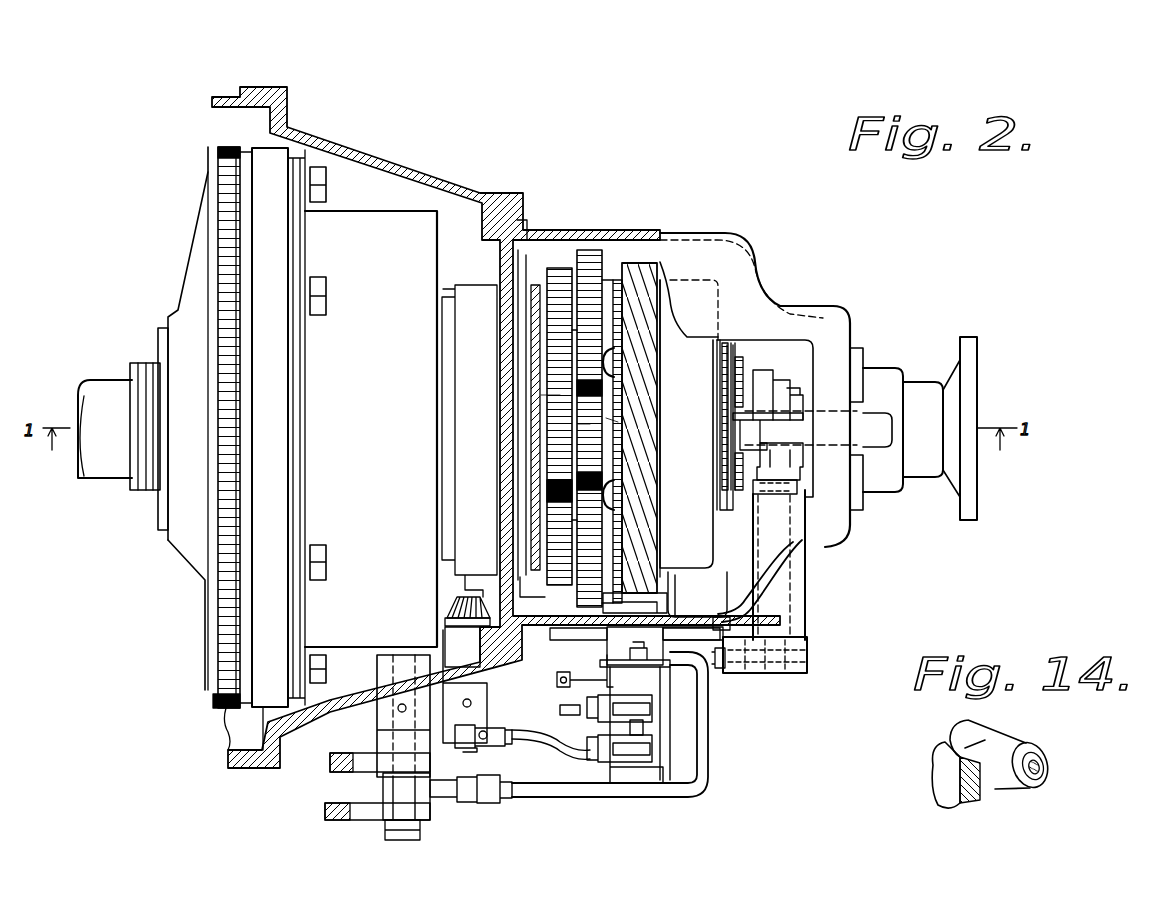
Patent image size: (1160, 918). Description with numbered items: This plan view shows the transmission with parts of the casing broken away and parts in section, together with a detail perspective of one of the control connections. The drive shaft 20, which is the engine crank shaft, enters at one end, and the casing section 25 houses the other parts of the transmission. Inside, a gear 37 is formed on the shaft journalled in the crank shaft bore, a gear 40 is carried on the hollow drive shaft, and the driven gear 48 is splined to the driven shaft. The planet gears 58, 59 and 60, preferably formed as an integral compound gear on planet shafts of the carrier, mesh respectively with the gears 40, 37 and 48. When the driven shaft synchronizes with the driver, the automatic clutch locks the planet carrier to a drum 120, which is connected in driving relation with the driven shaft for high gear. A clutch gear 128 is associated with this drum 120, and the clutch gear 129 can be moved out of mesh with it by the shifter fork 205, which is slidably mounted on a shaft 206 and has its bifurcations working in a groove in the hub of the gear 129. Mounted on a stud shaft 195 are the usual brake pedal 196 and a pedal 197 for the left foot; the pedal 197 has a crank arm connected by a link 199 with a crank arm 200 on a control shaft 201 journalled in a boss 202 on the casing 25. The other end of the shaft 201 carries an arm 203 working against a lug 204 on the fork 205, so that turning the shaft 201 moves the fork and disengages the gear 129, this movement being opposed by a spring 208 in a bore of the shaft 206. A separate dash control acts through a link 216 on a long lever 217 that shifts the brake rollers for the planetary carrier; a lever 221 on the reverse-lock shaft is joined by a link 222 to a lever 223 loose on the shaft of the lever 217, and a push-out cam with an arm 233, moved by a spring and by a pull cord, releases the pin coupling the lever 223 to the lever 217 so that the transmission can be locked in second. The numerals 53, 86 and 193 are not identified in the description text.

In FIG. 2, the drive shaft 20 is at (122, 466).
In FIG. 2, the casing section 25 is at (716, 238).
In FIG. 2, the gear 37 is at (583, 428).
In FIG. 2, the gear 40 is at (562, 402).
In FIG. 2, the driven gear 48 is at (613, 421).
In FIG. 2, the helical gear 53 is at (636, 264).
In FIG. 2, the planet gear 58 is at (561, 268).
In FIG. 2, the planet gear 59 is at (598, 250).
In FIG. 2, the planet gear 60 is at (626, 262).
In FIG. 2, the flywheel housing 86 is at (375, 226).
In FIG. 2, the drum 120 is at (690, 572).
In FIG. 2, the clutch gear 128 is at (728, 352).
In FIG. 2, the clutch gear 129 is at (742, 368).
In FIG. 2, the pipe fitting 193 is at (449, 800).
In FIG. 2, the stud shaft 195 is at (408, 743).
In FIG. 2, the brake pedal 196 is at (368, 762).
In FIG. 2, the pedal 197 is at (375, 810).
In FIG. 2, the link 199 is at (683, 786).
In FIG. 2, the crank arm 200 is at (808, 653).
In FIG. 2, the control shaft 201 is at (778, 614).
In FIG. 2, the boss 202 is at (797, 598).
In FIG. 2, the arm 203 is at (806, 509).
In FIG. 14, the arm 203 is at (945, 775).
In FIG. 2, the lug 204 is at (800, 464).
In FIG. 14, the lug 204 is at (988, 778).
In FIG. 2, the shifter fork 205 is at (776, 393).
In FIG. 14, the shifter fork 205 is at (1000, 733).
In FIG. 14, the shaft 206 is at (1040, 762).
In FIG. 14, the spring 208 is at (1045, 770).
In FIG. 2, the link 216 is at (574, 708).
In FIG. 2, the long lever 217 is at (646, 710).
In FIG. 2, the lever 221 is at (498, 737).
In FIG. 2, the link 222 is at (557, 745).
In FIG. 2, the lever 223 is at (645, 748).
In FIG. 2, the arm 233 is at (580, 672).